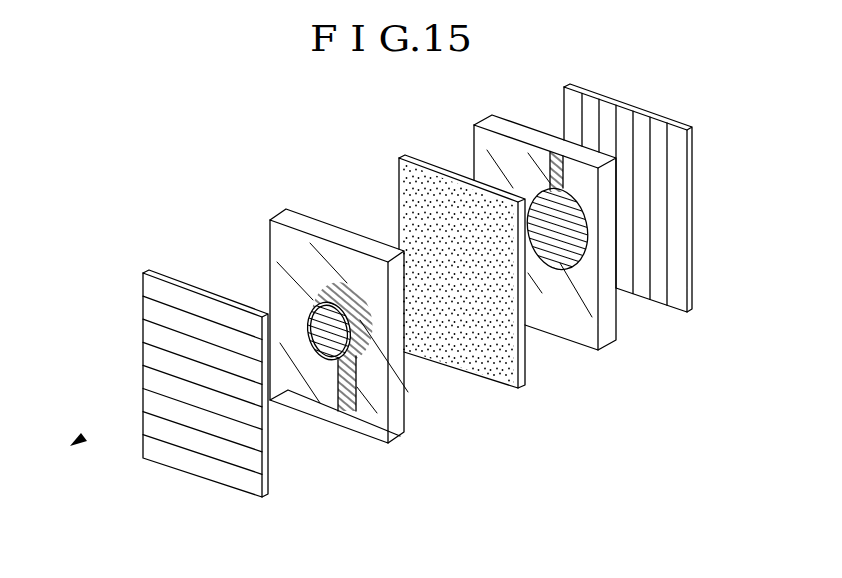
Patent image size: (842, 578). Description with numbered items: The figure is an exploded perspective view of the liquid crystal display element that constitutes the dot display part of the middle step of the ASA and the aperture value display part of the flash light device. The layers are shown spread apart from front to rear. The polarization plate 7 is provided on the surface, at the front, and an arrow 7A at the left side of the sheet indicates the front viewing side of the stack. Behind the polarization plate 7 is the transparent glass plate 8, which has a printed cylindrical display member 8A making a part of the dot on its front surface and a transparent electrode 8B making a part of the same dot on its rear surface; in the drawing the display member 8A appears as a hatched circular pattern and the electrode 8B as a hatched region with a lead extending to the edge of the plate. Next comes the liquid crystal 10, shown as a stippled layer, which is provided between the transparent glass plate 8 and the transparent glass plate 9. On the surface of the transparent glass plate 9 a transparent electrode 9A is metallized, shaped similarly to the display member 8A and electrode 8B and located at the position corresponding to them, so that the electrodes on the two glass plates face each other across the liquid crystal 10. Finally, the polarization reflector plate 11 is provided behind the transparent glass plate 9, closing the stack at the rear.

The polarization plate 7 is at (247, 483).
The incident light direction 7A is at (80, 437).
The transparent glass plate 8 is at (355, 352).
The printed cylindrical display member 8A is at (322, 370).
The transparent electrode 8B is at (393, 362).
The transparent glass plate 9 is at (552, 252).
The transparent electrode 9A is at (550, 267).
The liquid crystal 10 is at (488, 367).
The polarization reflector plate 11 is at (657, 290).